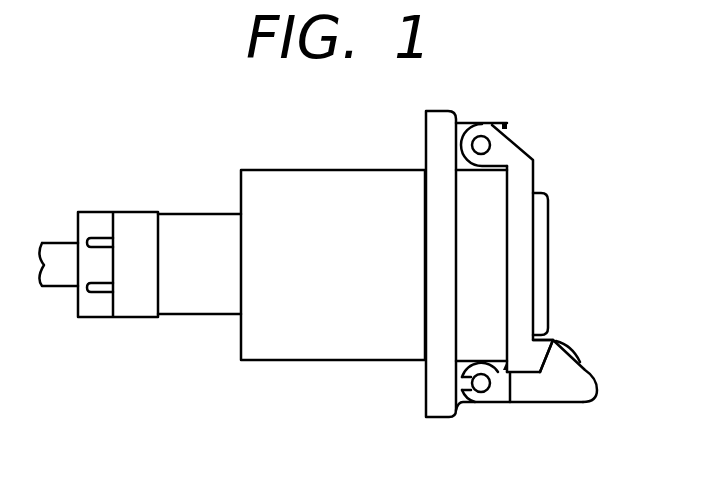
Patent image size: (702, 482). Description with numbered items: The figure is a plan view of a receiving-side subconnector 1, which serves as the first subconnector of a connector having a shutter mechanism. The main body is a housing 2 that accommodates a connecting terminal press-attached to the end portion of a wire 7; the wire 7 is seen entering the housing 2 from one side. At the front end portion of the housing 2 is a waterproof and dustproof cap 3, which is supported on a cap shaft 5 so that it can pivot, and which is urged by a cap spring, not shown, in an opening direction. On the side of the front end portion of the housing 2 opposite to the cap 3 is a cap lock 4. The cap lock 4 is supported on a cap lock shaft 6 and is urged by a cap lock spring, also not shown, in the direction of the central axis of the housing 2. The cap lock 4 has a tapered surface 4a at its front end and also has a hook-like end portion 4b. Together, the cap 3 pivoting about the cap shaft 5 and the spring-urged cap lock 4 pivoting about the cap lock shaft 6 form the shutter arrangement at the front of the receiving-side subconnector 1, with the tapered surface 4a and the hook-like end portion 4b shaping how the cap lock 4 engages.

The receiving-side subconnector 1 is at (548, 101).
The housing 2 is at (304, 178).
The waterproof and dustproof cap 3 is at (528, 172).
The cap lock 4 is at (550, 388).
The tapered surface 4a is at (577, 367).
The hook-like end portion 4b is at (553, 348).
The cap shaft 5 is at (478, 140).
The cap lock shaft 6 is at (480, 385).
The wire 7 is at (57, 286).